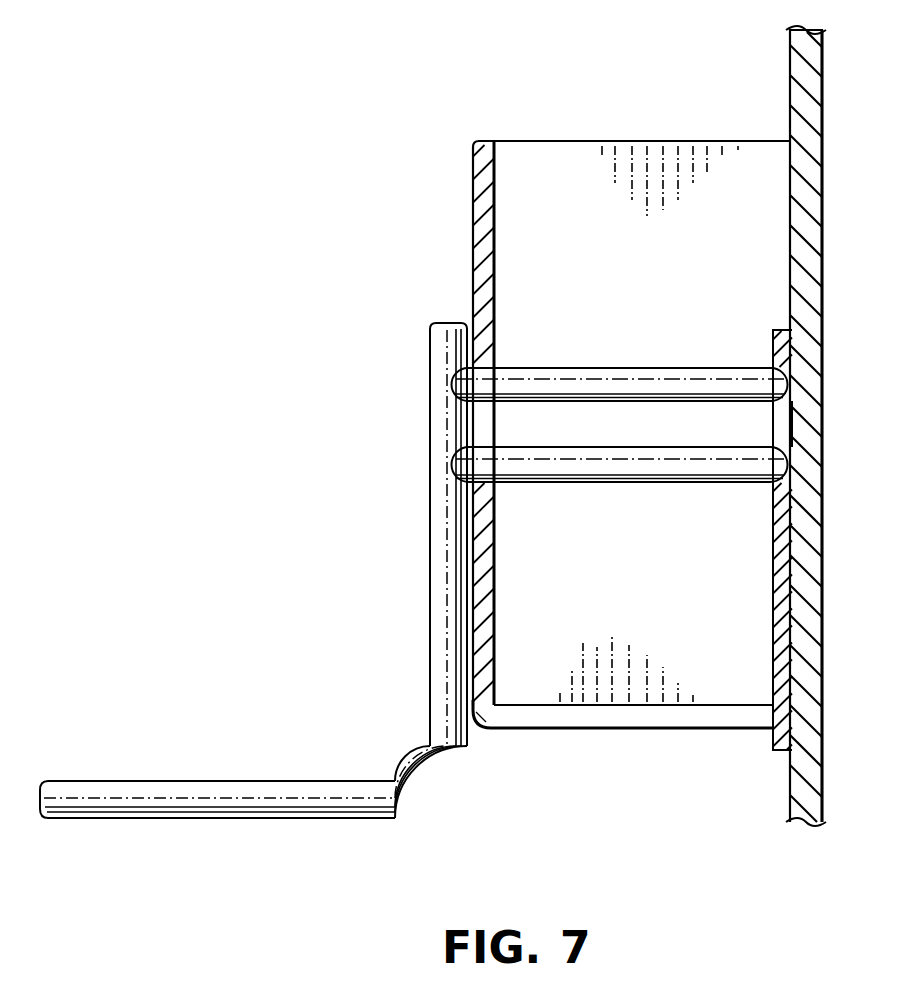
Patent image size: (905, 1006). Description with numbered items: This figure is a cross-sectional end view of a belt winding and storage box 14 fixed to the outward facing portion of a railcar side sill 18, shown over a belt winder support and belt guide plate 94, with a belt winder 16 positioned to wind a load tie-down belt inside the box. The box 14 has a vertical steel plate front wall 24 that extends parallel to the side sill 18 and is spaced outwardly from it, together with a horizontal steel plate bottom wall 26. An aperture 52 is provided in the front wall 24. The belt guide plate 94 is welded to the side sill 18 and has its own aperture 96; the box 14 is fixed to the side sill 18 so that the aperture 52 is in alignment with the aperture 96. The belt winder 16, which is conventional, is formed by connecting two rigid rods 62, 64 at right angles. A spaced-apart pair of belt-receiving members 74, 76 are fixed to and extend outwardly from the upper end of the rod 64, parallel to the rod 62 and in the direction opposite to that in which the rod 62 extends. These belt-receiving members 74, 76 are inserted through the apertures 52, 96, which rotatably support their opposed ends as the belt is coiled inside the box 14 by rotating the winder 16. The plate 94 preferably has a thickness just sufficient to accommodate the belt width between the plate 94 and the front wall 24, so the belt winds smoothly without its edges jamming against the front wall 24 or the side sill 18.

The belt winding and storage box 14 is at (468, 177).
The belt winder 16 is at (422, 612).
The railcar side sill 18 is at (786, 78).
The front wall 24 is at (504, 558).
The bottom wall 26 is at (650, 726).
The aperture 52 is at (484, 418).
The rigid rod 62 is at (257, 773).
The rigid rod 64 is at (424, 508).
The belt-receiving member 74 is at (627, 493).
The belt-receiving member 76 is at (628, 358).
The belt winder support and belt guide plate 94 is at (766, 568).
The aperture 96 is at (784, 420).